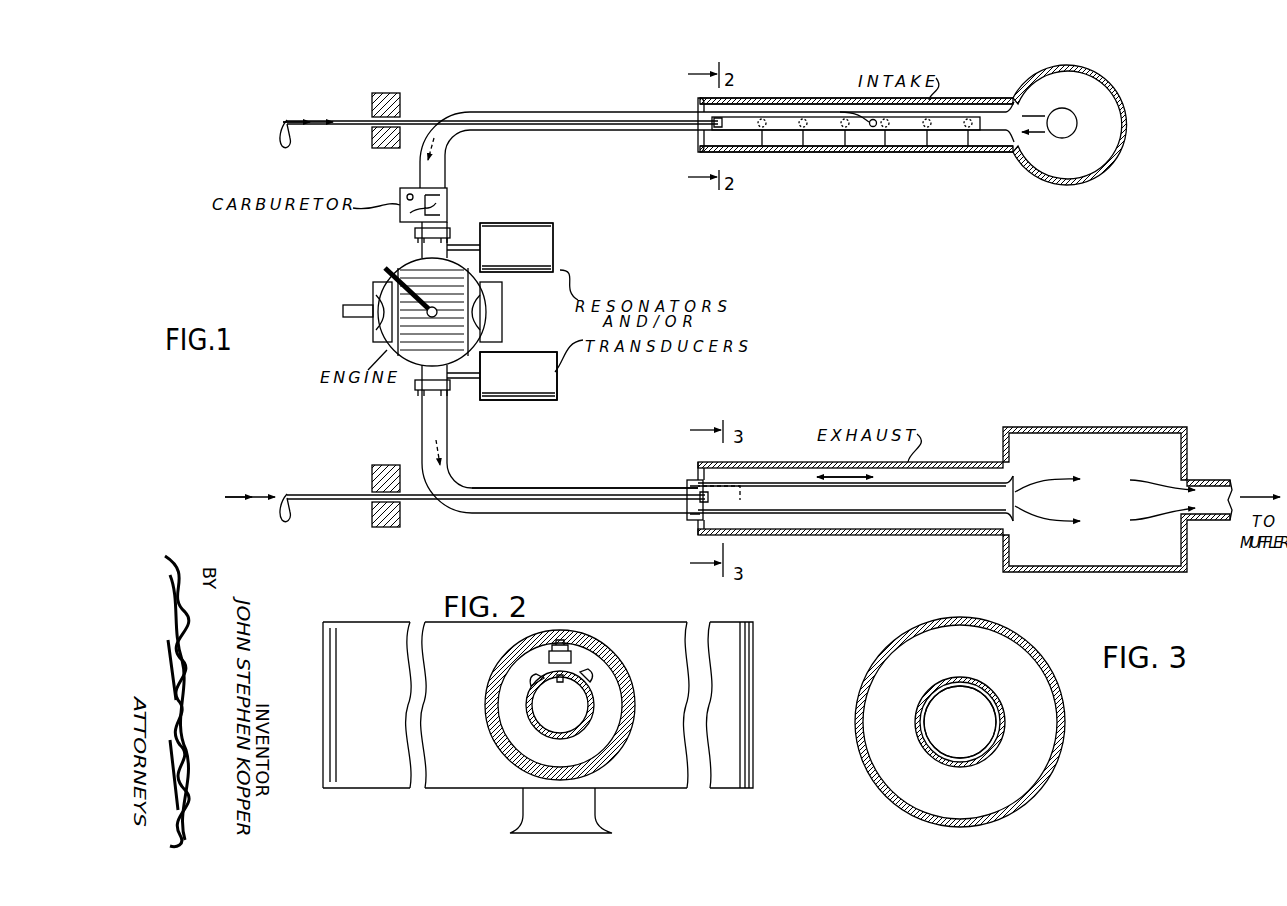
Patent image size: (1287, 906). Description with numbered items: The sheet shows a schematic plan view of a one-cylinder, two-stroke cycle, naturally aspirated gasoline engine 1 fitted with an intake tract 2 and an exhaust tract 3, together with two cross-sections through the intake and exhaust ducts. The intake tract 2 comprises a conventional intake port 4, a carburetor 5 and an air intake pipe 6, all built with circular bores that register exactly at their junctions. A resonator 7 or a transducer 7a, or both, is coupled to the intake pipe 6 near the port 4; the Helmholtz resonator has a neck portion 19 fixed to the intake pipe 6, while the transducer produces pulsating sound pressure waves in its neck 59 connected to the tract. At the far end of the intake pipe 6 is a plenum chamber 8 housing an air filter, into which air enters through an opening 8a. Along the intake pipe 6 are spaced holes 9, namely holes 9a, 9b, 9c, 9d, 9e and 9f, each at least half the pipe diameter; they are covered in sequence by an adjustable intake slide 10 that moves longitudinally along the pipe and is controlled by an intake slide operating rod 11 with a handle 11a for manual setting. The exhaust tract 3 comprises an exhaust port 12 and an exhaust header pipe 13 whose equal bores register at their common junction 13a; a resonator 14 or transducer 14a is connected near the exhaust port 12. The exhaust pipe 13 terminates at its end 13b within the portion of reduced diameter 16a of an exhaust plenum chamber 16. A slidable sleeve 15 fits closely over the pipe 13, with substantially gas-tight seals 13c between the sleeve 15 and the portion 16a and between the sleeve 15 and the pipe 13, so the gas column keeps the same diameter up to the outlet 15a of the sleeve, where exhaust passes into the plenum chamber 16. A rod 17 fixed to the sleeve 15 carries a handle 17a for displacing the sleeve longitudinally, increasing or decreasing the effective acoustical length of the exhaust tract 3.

In FIG. 1, the engine 1 is at (505, 314).
In FIG. 1, the intake tract 2 is at (578, 141).
In FIG. 1, the exhaust tract 3 is at (576, 486).
In FIG. 3, the exhaust tract 3 is at (925, 702).
In FIG. 1, the intake port 4 is at (420, 250).
In FIG. 1, the carburetor 5 is at (449, 205).
In FIG. 1, the air intake pipe 6 is at (500, 112).
In FIG. 2, the air intake pipe 6 is at (592, 707).
In FIG. 1, the resonator 7 is at (553, 243).
In FIG. 1, the transducer 7a is at (516, 247).
In FIG. 1, the plenum chamber 8 is at (1094, 163).
In FIG. 2, the plenum chamber 8 is at (663, 625).
In FIG. 1, the opening 8a is at (1072, 125).
In FIG. 2, the opening 8a is at (588, 800).
In FIG. 1, the spaced holes 9 is at (755, 172).
In FIG. 2, the spaced holes 9 is at (560, 680).
In FIG. 1, the hole 9a is at (762, 147).
In FIG. 1, the hole 9b is at (803, 147).
In FIG. 1, the hole 9c is at (845, 147).
In FIG. 1, the hole 9d is at (885, 147).
In FIG. 1, the hole 9e is at (927, 147).
In FIG. 1, the hole 9f is at (968, 147).
In FIG. 1, the intake slide 10 is at (866, 120).
In FIG. 2, the intake slide 10 is at (580, 672).
In FIG. 1, the intake slide operating rod 11 is at (432, 108).
In FIG. 2, the intake slide operating rod 11 is at (572, 660).
In FIG. 1, the handle 11a is at (340, 145).
In FIG. 1, the exhaust port 12 is at (418, 385).
In FIG. 1, the exhaust header pipe 13 is at (448, 447).
In FIG. 1, the junction 13a is at (450, 395).
In FIG. 1, the end of exhaust pipe 13b is at (740, 486).
In FIG. 1, the seals 13c is at (695, 480).
In FIG. 1, the resonator 14 is at (558, 392).
In FIG. 1, the transducer 14a is at (518, 376).
In FIG. 1, the slidable sleeve 15 is at (815, 512).
In FIG. 3, the slidable sleeve 15 is at (994, 670).
In FIG. 1, the outlet of sleeve 15a is at (1016, 488).
In FIG. 1, the exhaust plenum chamber 16 is at (1063, 572).
In FIG. 1, the portion of reduced diameter 16a is at (918, 536).
In FIG. 3, the portion of reduced diameter 16a is at (1064, 722).
In FIG. 1, the rod 17 is at (420, 502).
In FIG. 1, the handle 17a is at (292, 518).
In FIG. 1, the neck portion 19 is at (478, 245).
In FIG. 1, the neck of transducer 59 is at (472, 372).